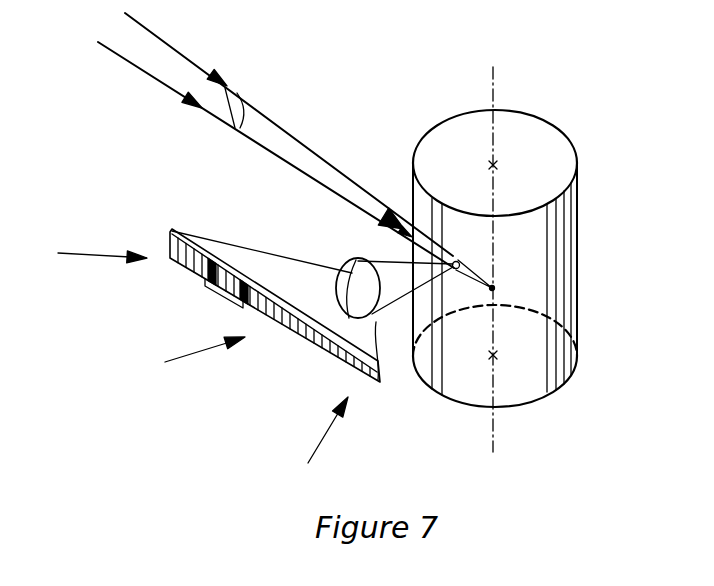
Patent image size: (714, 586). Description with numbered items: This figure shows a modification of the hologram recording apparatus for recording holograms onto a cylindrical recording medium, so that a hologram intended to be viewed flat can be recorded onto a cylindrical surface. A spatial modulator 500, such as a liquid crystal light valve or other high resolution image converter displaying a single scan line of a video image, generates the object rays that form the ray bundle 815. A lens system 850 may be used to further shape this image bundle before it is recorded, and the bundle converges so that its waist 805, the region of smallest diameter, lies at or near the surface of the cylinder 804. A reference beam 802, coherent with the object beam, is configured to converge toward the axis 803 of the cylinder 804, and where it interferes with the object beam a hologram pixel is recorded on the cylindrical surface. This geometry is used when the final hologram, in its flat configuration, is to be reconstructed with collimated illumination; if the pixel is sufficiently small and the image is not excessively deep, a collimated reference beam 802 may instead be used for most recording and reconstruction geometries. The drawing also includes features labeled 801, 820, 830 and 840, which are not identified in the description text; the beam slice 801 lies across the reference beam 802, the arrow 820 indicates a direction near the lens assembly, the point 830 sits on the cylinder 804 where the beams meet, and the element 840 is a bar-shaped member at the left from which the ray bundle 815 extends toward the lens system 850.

The spatial modulator 500 is at (378, 380).
The beam cross-section 801 is at (233, 86).
The reference beam 802 is at (315, 153).
The axis 803 is at (495, 98).
The cylinder 804 is at (575, 150).
The waist 805 is at (440, 233).
The ray bundle 815 is at (392, 312).
The direction of motion 820 is at (313, 447).
The focal spot 830 is at (492, 288).
The detector array 840 is at (215, 296).
The lens system 850 is at (348, 262).